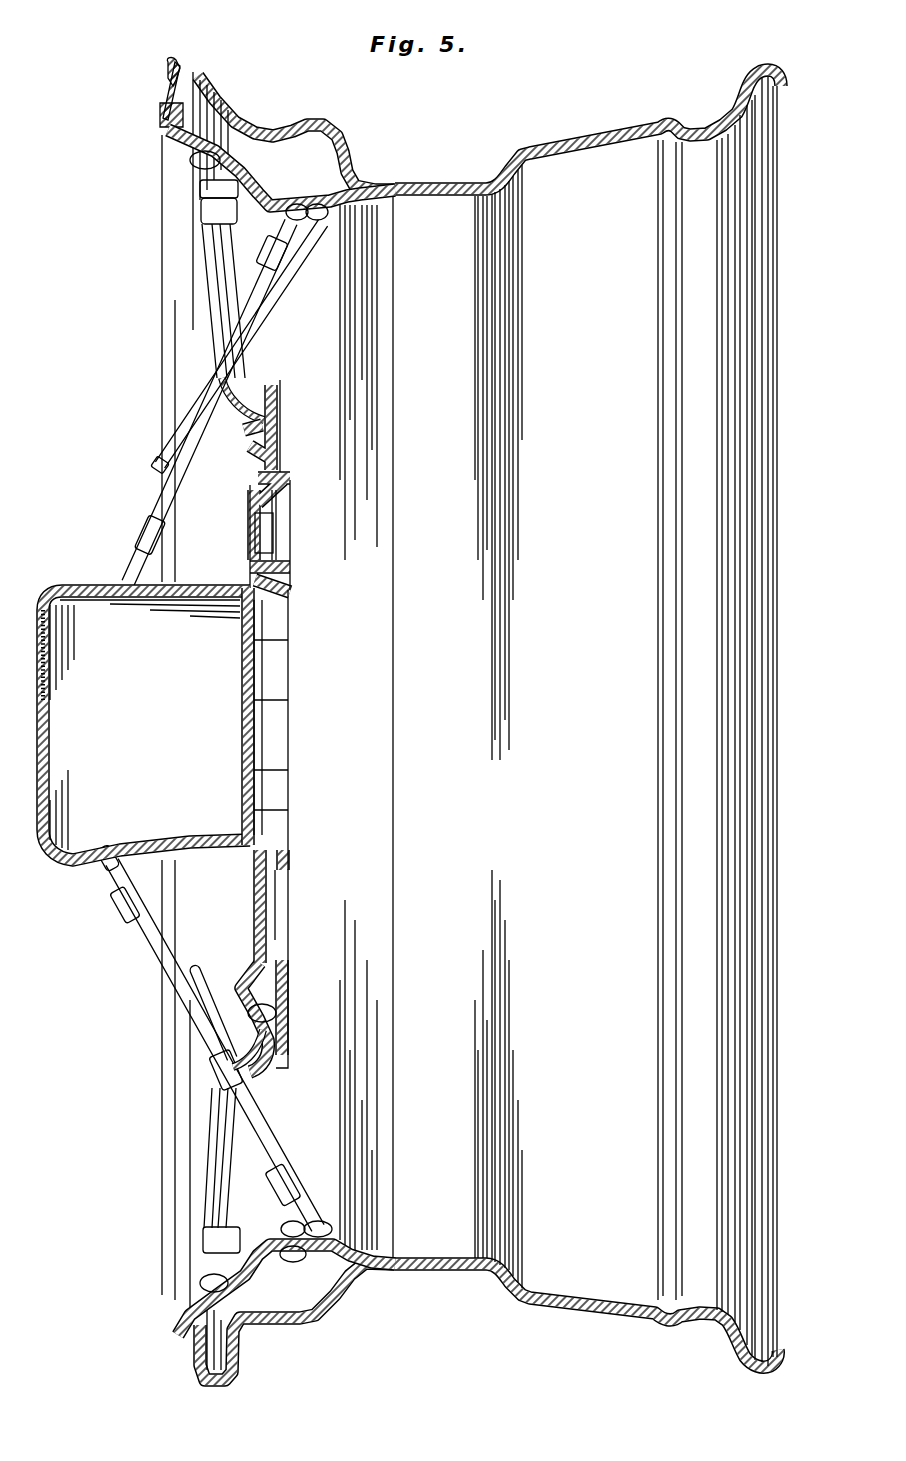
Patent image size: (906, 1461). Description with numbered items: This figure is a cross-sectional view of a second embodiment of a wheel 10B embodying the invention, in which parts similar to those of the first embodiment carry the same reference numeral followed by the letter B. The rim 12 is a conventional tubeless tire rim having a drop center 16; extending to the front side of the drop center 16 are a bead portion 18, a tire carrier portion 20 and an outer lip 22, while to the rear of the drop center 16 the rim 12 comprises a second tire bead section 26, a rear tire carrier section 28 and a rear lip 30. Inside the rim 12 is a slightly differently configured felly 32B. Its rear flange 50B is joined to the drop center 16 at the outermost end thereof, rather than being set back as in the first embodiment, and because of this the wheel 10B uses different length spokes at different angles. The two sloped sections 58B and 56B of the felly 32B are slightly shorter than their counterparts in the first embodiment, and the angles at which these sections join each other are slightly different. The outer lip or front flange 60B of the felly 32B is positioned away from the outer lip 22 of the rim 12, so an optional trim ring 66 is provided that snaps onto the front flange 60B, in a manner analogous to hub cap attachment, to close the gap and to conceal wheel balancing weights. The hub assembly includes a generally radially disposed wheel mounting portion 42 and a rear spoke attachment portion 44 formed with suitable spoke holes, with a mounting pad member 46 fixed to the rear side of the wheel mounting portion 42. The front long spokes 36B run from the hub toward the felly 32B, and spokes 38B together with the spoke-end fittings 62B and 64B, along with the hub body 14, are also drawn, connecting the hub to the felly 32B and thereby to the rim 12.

The wheel 10B is at (152, 60).
The rim 12 is at (225, 76).
The hub body 14 is at (98, 582).
The drop center 16 is at (452, 183).
The bead portion 18 is at (320, 118).
The tire carrier portion 20 is at (266, 124).
The outer lip 22 is at (205, 66).
The second tire bead section 26 is at (669, 122).
The rear tire carrier section 28 is at (707, 120).
The rear lip 30 is at (742, 88).
The felly 32B is at (345, 228).
The front long spokes 36B is at (185, 432).
The spoke 38B is at (240, 282).
The wheel mounting portion 42 is at (258, 905).
The rear spoke attachment portion 44 is at (278, 448).
The mounting pad member 46 is at (285, 545).
The rear flange 50B is at (384, 186).
The sloped section 56B is at (338, 218).
The sloped section 58B is at (240, 190).
The front flange 60B is at (178, 132).
The spoke head 62B is at (322, 1215).
The spoke nipple 64B is at (198, 190).
The trim ring 66 is at (160, 105).